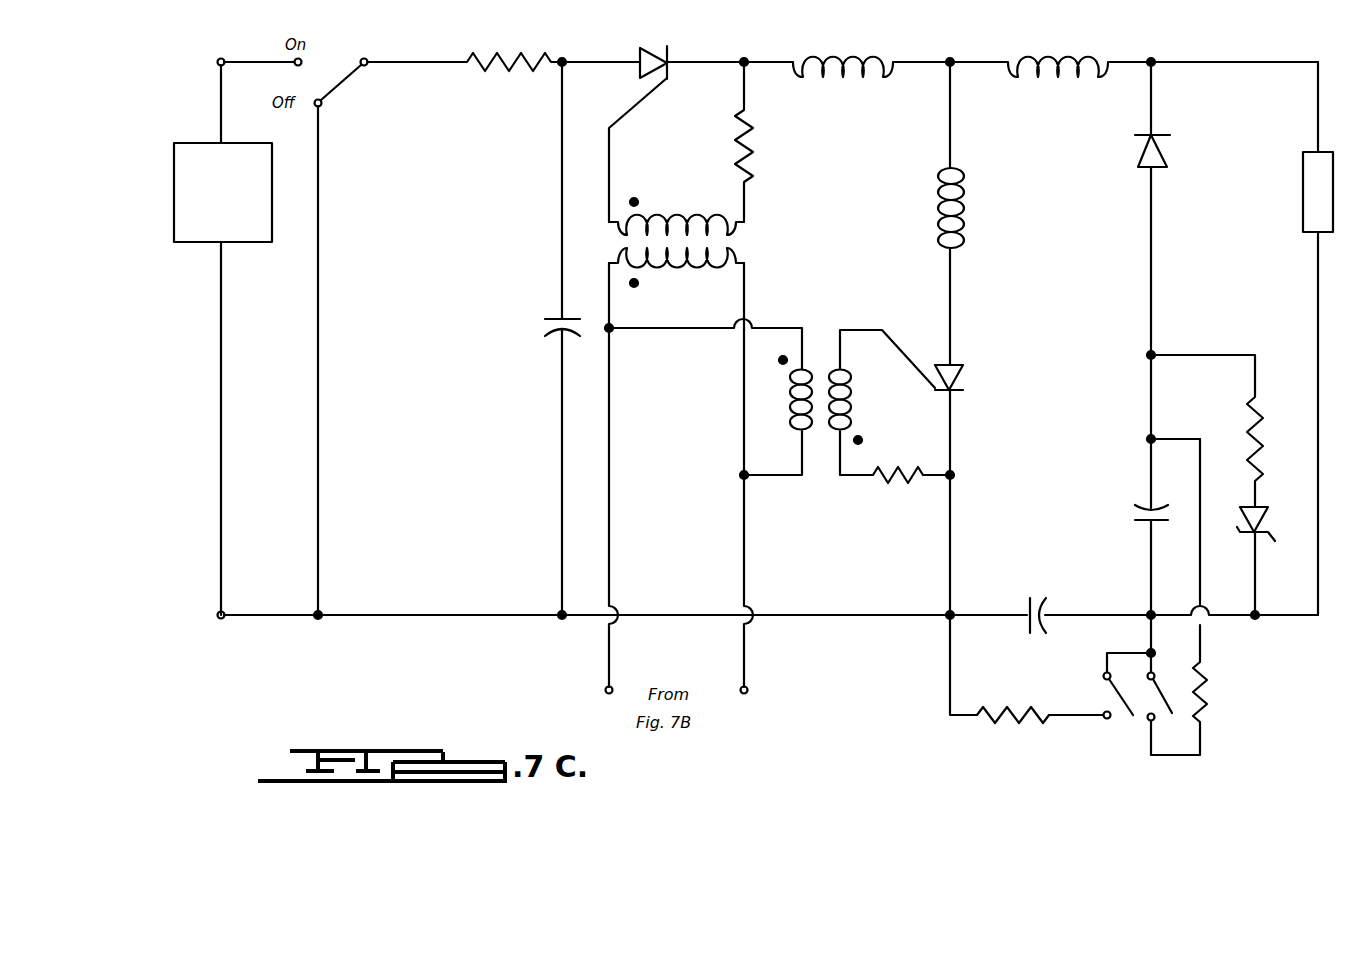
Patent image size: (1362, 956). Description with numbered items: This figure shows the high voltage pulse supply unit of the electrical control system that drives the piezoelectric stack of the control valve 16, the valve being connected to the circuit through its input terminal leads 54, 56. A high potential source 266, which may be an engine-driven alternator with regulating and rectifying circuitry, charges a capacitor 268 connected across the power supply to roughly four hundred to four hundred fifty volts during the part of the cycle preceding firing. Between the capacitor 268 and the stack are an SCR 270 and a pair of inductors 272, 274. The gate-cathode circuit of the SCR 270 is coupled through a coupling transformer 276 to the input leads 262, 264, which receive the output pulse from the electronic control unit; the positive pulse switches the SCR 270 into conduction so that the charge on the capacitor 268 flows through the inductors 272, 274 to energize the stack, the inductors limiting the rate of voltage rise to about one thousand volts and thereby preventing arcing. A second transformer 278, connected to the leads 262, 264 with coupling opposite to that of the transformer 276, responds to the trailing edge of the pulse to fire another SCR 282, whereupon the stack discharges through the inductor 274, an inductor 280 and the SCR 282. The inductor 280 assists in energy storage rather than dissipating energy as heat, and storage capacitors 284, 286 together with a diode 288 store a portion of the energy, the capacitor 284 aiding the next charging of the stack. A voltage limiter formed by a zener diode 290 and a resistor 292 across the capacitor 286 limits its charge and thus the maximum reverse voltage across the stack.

The control valve 16 is at (1301, 160).
The input terminal lead 54 is at (1316, 90).
The input terminal lead 56 is at (1316, 308).
The input lead 262 is at (606, 654).
The input lead 264 is at (746, 660).
The high potential source 266 is at (192, 246).
The capacitor 268 is at (543, 325).
The SCR 270 is at (640, 46).
The inductor 272 is at (813, 56).
The inductor 274 is at (1043, 57).
The coupling transformer 276 is at (728, 238).
The transformer 278 is at (818, 338).
The inductor 280 is at (966, 232).
The SCR 282 is at (963, 372).
The storage capacitor 284 is at (1036, 598).
The storage capacitor 286 is at (1133, 516).
The diode 288 is at (1136, 158).
The zener diode 290 is at (1268, 513).
The resistor 292 is at (1250, 427).